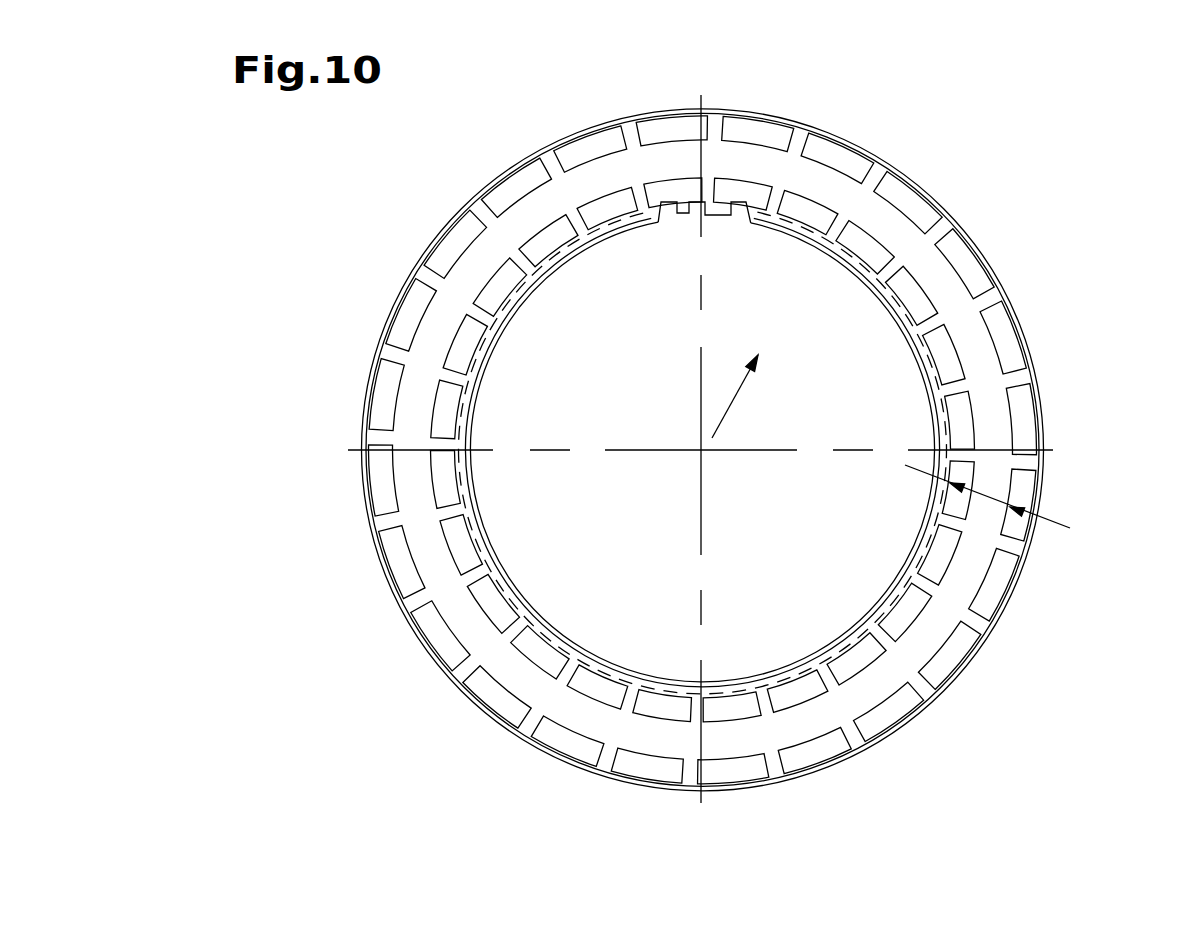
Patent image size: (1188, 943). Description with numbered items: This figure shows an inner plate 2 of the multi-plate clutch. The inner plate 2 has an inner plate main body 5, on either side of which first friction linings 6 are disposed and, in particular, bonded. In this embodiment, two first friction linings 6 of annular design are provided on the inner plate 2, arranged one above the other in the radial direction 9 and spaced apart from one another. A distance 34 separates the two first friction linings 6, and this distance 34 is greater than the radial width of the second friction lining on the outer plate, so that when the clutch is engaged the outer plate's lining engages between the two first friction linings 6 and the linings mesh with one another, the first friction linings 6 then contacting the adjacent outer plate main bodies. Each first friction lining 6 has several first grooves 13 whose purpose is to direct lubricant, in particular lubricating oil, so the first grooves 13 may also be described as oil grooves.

The inner plate 2 is at (762, 410).
The inner plate main body 5 is at (790, 177).
The first friction lining 6 is at (1018, 323).
The radial direction 9 is at (740, 408).
The first groove 13 is at (892, 157).
The distance 34 is at (987, 503).